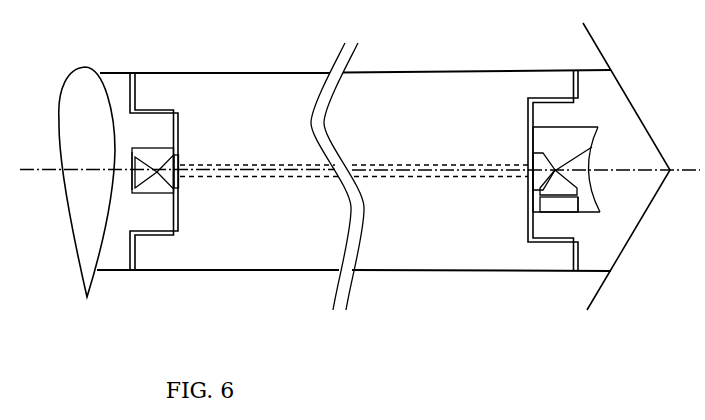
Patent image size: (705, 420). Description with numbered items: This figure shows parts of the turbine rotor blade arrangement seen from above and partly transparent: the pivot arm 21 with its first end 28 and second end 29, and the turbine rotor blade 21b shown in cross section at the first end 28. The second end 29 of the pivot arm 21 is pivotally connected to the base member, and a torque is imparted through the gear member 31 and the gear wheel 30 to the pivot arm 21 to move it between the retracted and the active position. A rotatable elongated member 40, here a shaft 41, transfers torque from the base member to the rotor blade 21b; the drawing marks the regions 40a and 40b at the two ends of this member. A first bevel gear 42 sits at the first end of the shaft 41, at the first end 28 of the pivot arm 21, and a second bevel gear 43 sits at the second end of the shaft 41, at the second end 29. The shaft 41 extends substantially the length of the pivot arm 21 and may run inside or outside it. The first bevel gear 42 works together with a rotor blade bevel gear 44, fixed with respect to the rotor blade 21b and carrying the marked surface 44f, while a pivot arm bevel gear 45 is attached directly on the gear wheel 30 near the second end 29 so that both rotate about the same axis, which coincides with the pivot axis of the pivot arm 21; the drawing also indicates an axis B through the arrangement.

The pivot arm 21 is at (225, 87).
The turbine rotor blade 21b is at (62, 88).
The first end of pivot arm 28 is at (160, 265).
The second end of pivot arm 29 is at (528, 265).
The gear wheel 30 is at (573, 207).
The gear member 31 is at (590, 205).
The rotatable elongated member 40 is at (390, 177).
The light emitting unit 40a is at (185, 183).
The light receiving unit 40b is at (530, 195).
The shaft 41 is at (230, 166).
The first bevel gear 42 is at (160, 163).
The second bevel gear 43 is at (548, 157).
The rotor blade bevel gear 44 is at (143, 181).
The reflecting surface 44f is at (128, 181).
The pivot arm bevel gear 45 is at (592, 155).
The axis B is at (33, 171).